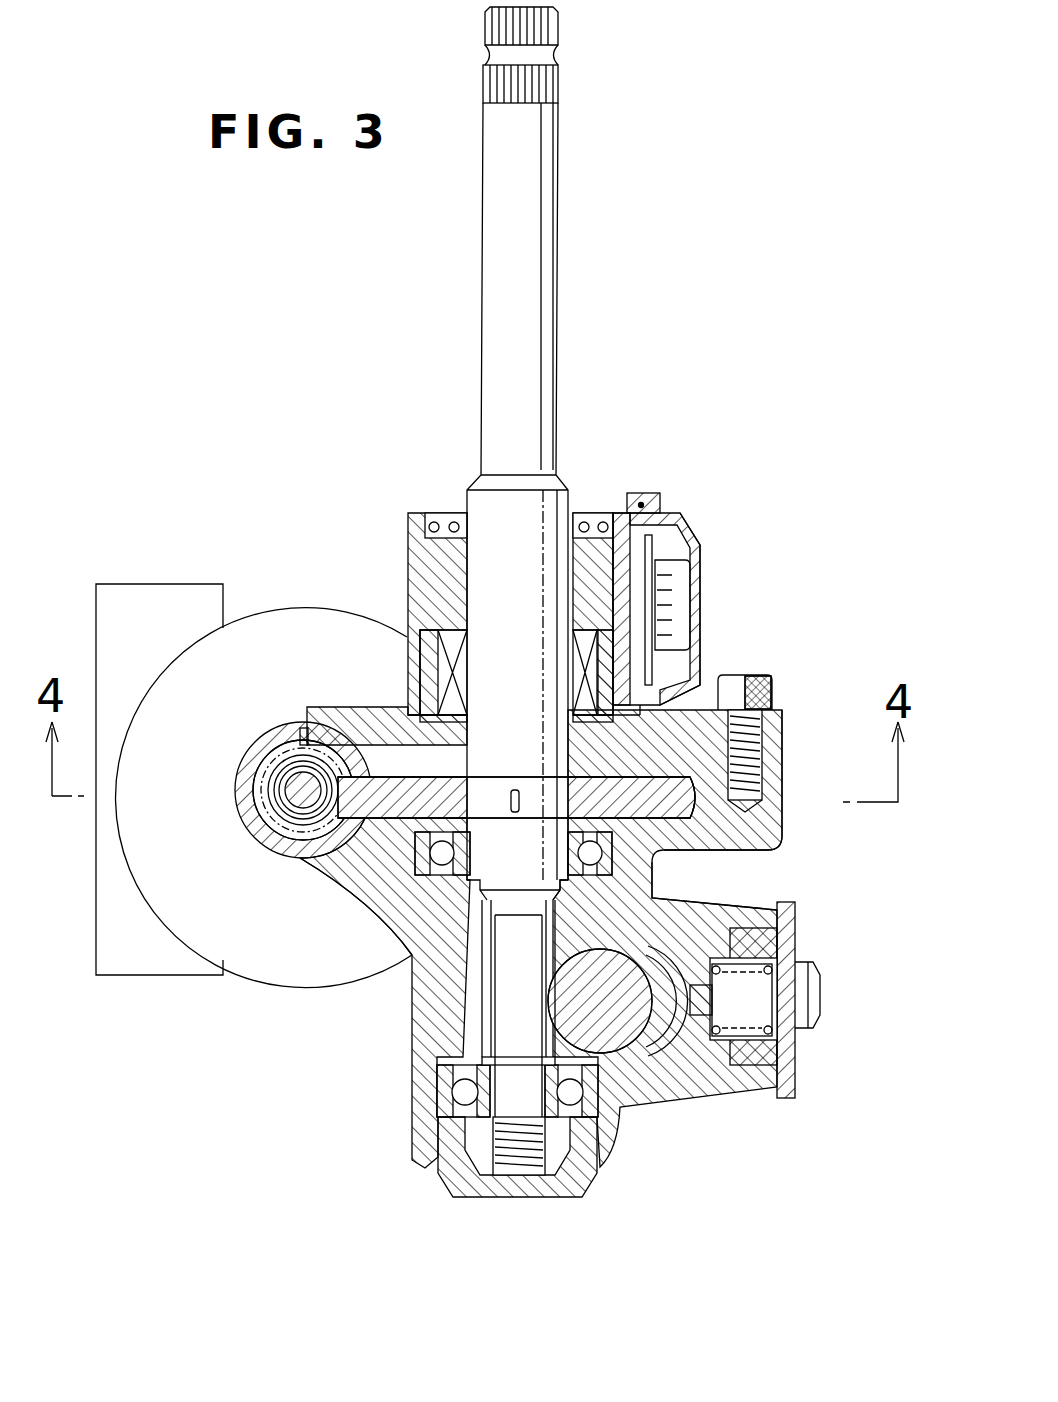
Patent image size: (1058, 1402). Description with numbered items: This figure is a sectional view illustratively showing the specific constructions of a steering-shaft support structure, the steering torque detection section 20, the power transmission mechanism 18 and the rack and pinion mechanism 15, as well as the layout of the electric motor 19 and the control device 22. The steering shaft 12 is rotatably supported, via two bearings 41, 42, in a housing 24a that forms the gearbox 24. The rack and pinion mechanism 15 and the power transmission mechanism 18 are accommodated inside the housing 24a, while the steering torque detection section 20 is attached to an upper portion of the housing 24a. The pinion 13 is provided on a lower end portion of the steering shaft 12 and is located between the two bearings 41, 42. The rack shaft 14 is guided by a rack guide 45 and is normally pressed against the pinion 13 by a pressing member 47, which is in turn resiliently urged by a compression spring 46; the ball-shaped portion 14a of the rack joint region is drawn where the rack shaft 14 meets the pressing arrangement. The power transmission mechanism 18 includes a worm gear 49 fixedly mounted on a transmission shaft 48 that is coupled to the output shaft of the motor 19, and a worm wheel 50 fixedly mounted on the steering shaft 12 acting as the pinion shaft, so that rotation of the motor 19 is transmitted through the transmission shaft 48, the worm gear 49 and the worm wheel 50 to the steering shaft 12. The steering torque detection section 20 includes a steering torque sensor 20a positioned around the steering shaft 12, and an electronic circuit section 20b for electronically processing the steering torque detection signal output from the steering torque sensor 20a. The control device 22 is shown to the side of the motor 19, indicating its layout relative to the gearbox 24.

The steering shaft 12 is at (547, 267).
The pinion 13 is at (490, 1070).
The rack shaft 14 is at (640, 1025).
The ball 14a is at (625, 1010).
The rack and pinion mechanism 15 is at (490, 995).
The power transmission mechanism 18 is at (307, 857).
The electric motor 19 is at (272, 648).
The steering torque detection section 20 is at (693, 522).
The steering torque sensor 20a is at (416, 640).
The electronic circuit section 20b is at (680, 585).
The control device 22 is at (153, 600).
The gearbox 24 is at (810, 910).
The housing 24a is at (767, 827).
The bearing 41 is at (400, 867).
The bearing 42 is at (615, 1108).
The rack guide 45 is at (797, 1062).
The compression spring 46 is at (790, 985).
The pressing member 47 is at (693, 935).
The transmission shaft 48 is at (262, 835).
The worm gear 49 is at (286, 769).
The worm wheel 50 is at (392, 778).